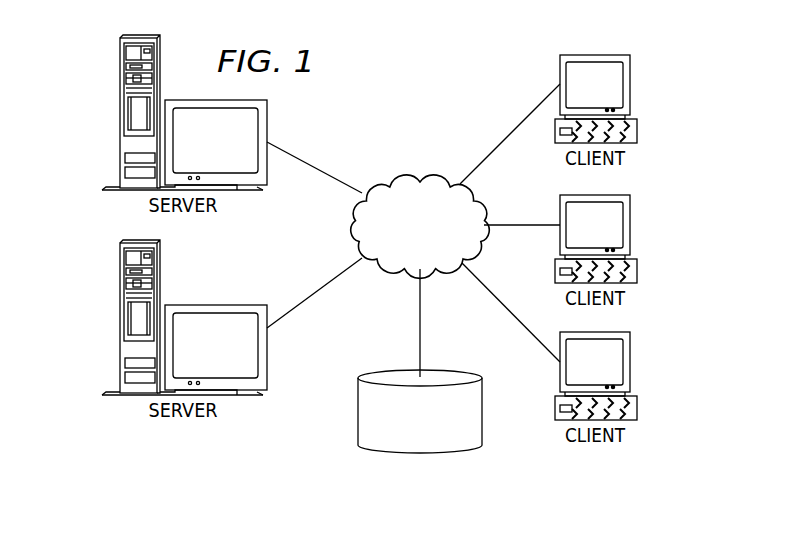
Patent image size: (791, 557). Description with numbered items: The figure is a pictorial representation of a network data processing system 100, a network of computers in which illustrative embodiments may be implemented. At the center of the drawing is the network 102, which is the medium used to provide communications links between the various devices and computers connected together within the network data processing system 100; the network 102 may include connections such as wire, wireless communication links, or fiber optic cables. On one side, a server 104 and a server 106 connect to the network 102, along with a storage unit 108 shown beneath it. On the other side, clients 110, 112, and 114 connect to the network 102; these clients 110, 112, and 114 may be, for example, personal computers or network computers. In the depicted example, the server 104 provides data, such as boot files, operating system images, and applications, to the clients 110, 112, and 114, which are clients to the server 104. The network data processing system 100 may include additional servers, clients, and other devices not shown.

The network data processing system 100 is at (471, 60).
The network 102 is at (391, 184).
The server 104 is at (120, 113).
The server 106 is at (120, 318).
The storage unit 108 is at (402, 452).
The client 110 is at (630, 84).
The client 112 is at (630, 224).
The client 114 is at (630, 361).